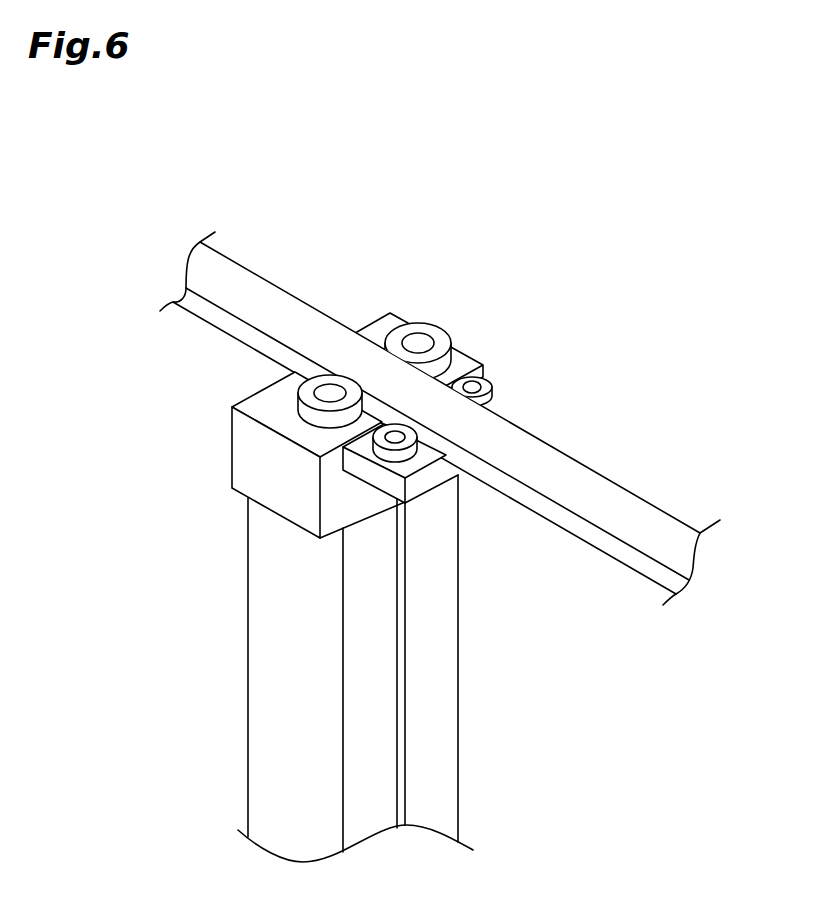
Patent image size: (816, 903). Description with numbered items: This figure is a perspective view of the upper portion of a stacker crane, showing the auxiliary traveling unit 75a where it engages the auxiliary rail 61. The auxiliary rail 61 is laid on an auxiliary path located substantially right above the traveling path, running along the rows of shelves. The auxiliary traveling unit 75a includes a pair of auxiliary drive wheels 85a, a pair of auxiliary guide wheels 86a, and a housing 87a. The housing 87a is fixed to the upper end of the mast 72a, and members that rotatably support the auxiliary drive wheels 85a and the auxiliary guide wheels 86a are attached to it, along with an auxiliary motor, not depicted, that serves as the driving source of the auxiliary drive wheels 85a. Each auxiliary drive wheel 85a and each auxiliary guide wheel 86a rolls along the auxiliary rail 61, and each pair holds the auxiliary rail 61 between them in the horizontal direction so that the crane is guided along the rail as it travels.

The auxiliary rail 61 is at (632, 515).
The mast 72a is at (440, 735).
The auxiliary traveling unit 75a is at (478, 342).
The auxiliary drive wheel 85a is at (440, 328).
The auxiliary guide wheel 86a is at (493, 387).
The housing 87a is at (390, 311).